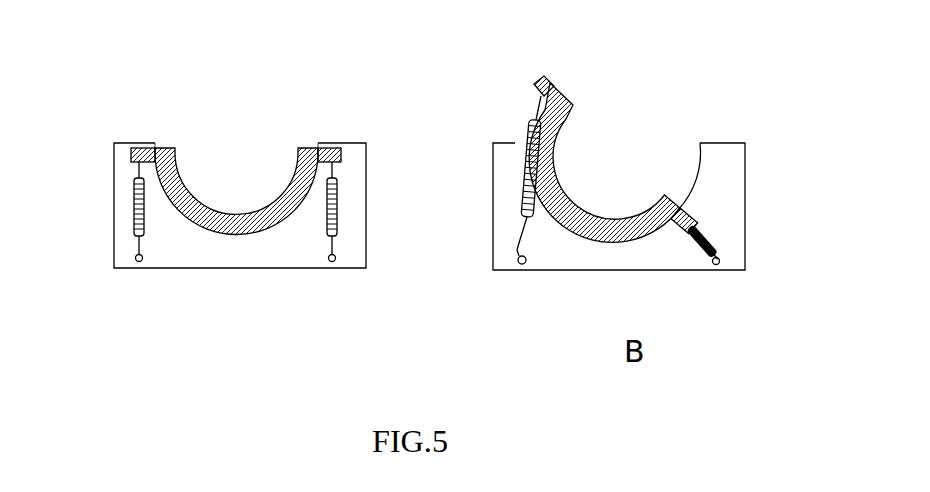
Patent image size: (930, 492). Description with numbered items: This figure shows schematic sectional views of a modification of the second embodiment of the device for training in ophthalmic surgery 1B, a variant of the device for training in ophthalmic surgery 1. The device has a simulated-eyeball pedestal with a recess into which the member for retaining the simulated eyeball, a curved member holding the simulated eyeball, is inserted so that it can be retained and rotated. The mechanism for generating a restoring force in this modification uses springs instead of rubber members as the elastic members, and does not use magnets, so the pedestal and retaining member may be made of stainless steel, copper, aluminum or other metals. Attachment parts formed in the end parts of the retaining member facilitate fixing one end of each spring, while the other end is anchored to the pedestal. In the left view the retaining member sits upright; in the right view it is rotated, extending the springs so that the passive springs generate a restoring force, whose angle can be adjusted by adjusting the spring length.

The device for training in ophthalmic surgery 1 is at (230, 184).
The device for training in ophthalmic surgery 1B is at (212, 21).